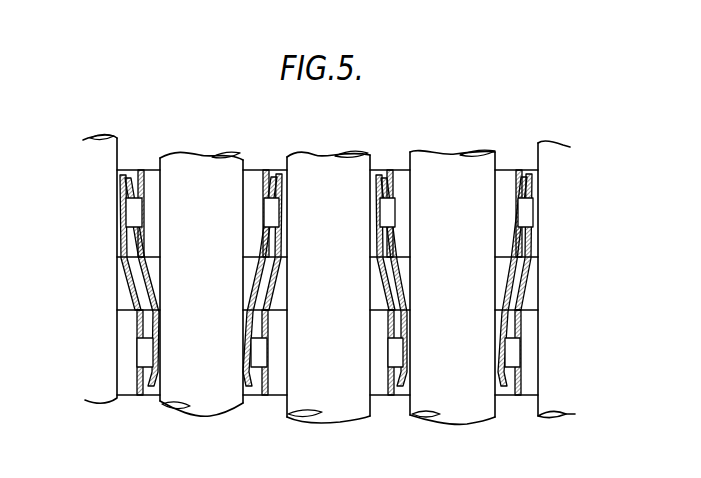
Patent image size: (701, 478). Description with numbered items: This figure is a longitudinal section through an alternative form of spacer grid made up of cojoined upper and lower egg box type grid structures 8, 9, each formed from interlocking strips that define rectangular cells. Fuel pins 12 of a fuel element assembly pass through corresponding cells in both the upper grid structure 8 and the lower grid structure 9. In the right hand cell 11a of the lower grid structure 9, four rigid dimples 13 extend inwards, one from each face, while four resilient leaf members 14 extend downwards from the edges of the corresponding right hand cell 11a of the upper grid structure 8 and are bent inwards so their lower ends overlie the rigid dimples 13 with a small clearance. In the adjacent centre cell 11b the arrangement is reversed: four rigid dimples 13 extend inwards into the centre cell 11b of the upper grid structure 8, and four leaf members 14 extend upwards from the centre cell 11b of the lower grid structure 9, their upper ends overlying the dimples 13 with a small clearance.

The upper grid structure 8 is at (507, 172).
The lower grid structure 9 is at (531, 331).
The right hand cell 11a is at (400, 182).
The centre cell 11b is at (273, 187).
The fuel pin 12 is at (197, 170).
The rigid dimple 13 is at (387, 210).
The resilient leaf member 14 is at (268, 279).